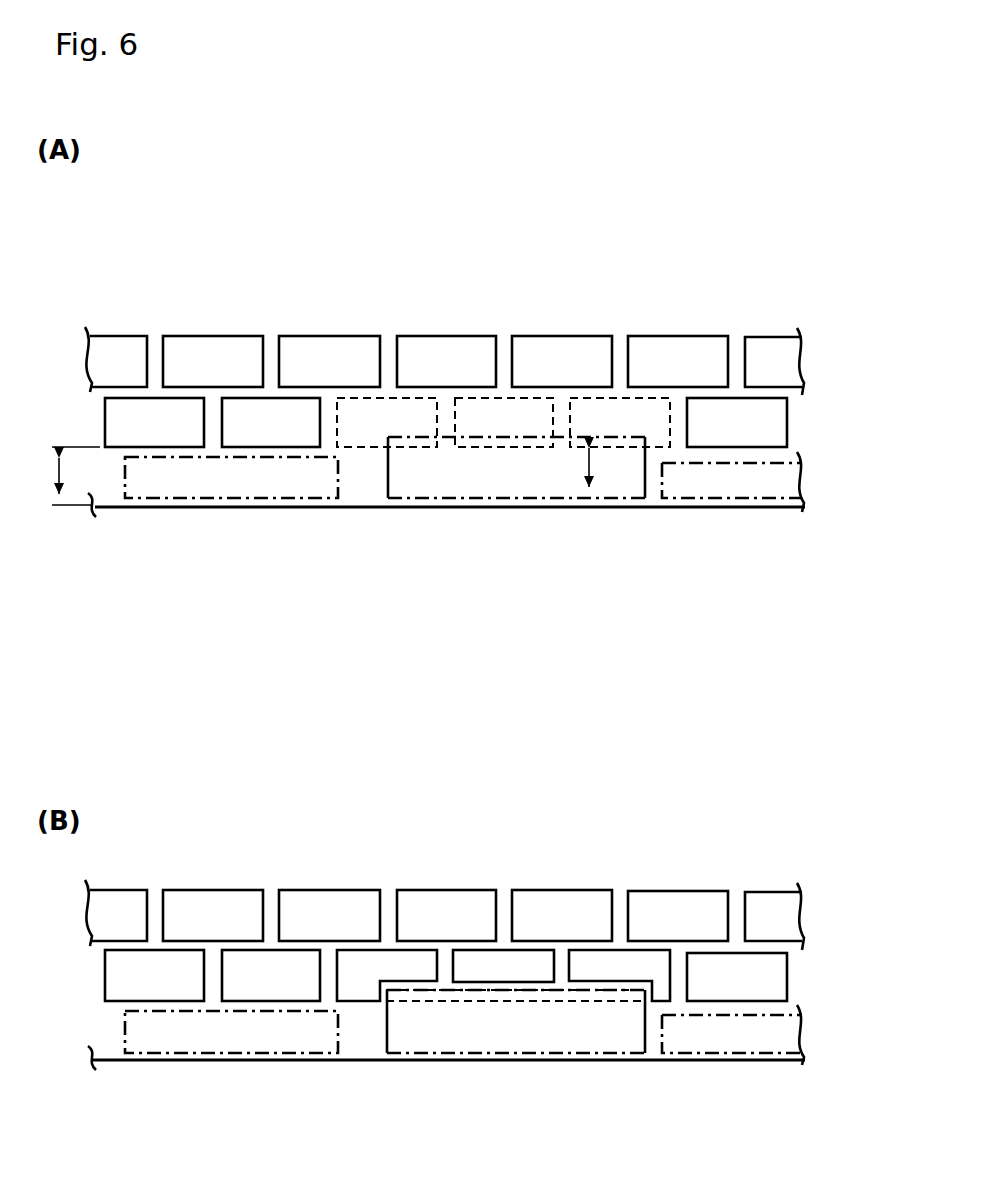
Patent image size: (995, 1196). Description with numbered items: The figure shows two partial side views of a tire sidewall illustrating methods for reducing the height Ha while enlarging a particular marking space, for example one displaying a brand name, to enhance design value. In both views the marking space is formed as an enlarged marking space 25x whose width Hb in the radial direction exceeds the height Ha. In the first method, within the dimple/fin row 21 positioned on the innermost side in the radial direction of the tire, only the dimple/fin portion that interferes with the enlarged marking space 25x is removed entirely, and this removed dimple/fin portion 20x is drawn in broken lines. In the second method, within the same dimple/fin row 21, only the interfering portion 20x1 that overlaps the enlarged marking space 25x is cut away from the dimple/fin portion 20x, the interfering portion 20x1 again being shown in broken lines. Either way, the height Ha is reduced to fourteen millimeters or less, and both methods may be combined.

The dimple/fin row 21 is at (94, 421).
The removed dimple/fin portion 20x is at (635, 397).
The interfering portion 20x1 is at (418, 1002).
The enlarged marking space 25x is at (532, 500).
The height Ha is at (58, 474).
The width Hb is at (590, 470).